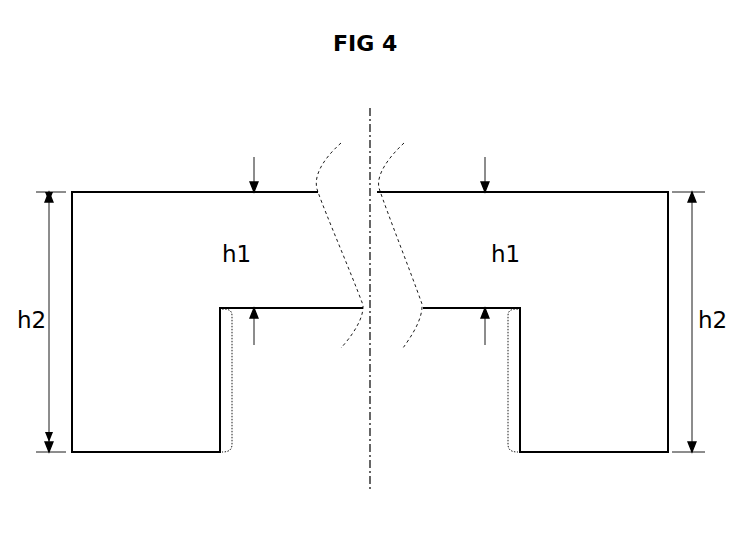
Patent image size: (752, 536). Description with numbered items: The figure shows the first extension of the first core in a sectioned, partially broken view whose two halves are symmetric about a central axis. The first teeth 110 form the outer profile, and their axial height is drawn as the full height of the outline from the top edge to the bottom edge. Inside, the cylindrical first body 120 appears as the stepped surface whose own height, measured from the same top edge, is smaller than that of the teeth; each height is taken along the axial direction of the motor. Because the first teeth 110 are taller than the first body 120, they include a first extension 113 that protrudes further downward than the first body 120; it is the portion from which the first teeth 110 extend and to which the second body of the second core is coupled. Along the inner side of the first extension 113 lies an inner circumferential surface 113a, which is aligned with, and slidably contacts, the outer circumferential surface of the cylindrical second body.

The first teeth 110 is at (146, 190).
The first body 120 is at (302, 309).
The first extension 113 is at (242, 378).
The inner circumferential surface 113a is at (220, 453).